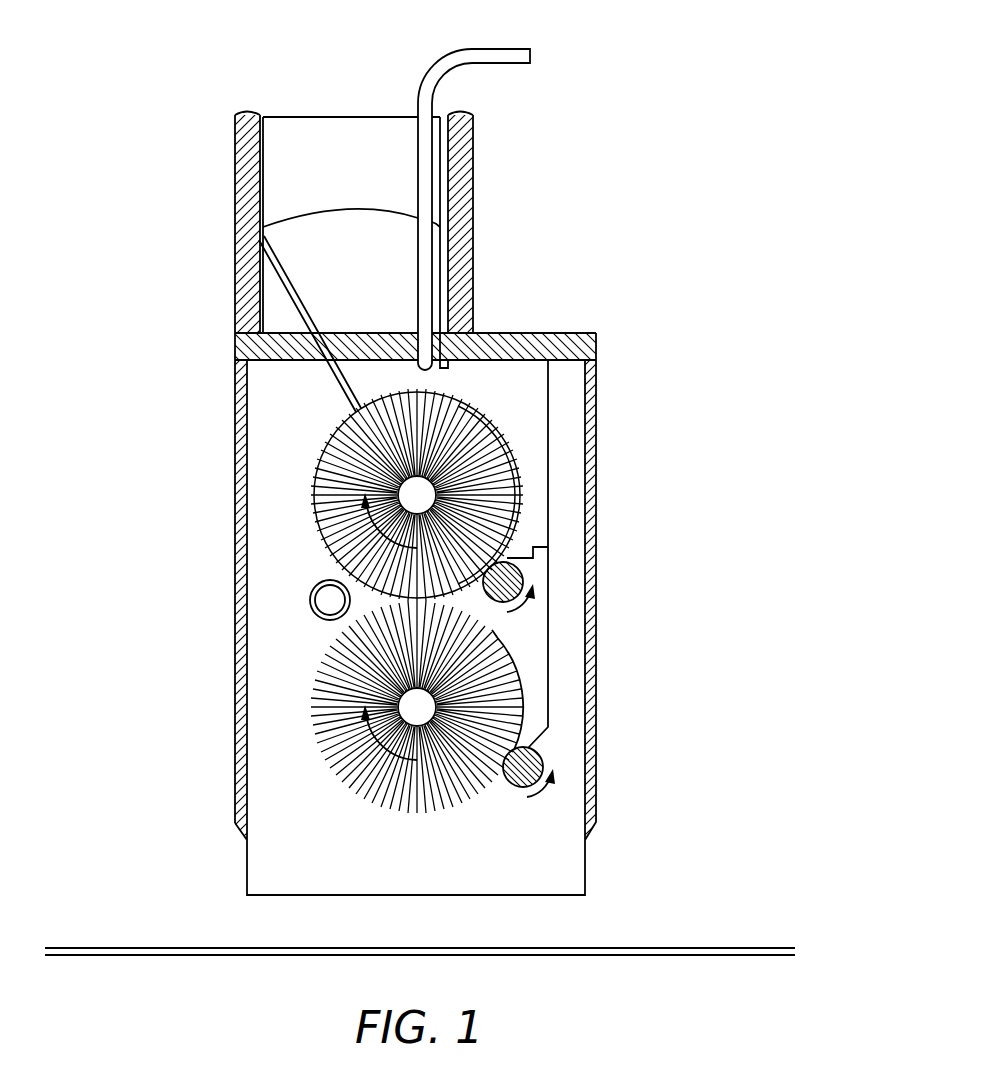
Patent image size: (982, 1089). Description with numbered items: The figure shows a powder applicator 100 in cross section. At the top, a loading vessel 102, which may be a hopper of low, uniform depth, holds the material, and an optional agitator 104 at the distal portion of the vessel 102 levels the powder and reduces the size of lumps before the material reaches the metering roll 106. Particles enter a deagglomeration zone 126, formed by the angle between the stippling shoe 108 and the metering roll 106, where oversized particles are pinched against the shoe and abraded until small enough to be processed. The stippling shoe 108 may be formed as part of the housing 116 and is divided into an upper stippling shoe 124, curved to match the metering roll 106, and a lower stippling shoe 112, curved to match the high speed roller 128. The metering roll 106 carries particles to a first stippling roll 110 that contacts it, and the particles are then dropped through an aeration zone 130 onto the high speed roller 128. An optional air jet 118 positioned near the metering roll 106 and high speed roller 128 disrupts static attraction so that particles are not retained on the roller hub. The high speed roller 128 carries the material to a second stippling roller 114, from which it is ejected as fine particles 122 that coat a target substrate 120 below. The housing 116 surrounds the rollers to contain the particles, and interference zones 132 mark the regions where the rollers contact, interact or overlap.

The cleaning apparatus 100 is at (752, 99).
The loading vessel 102 is at (403, 173).
The agitator 104 is at (503, 47).
The metering roll 106 is at (335, 459).
The stippling shoe 108 is at (521, 452).
The first stippling roll 110 is at (526, 565).
The lower stippling shoe 112 is at (527, 654).
The second stippling roller 114 is at (539, 759).
The housing 116 is at (598, 790).
The air jet 118 is at (331, 601).
The target substrate 120 is at (226, 948).
The fine particles 122 is at (590, 921).
The upper stippling shoe 124 is at (521, 415).
The deagglomeration zone 126 is at (462, 388).
The high speed roller 128 is at (321, 674).
The aeration zone 130 is at (491, 620).
The interference zones 132 is at (415, 598).